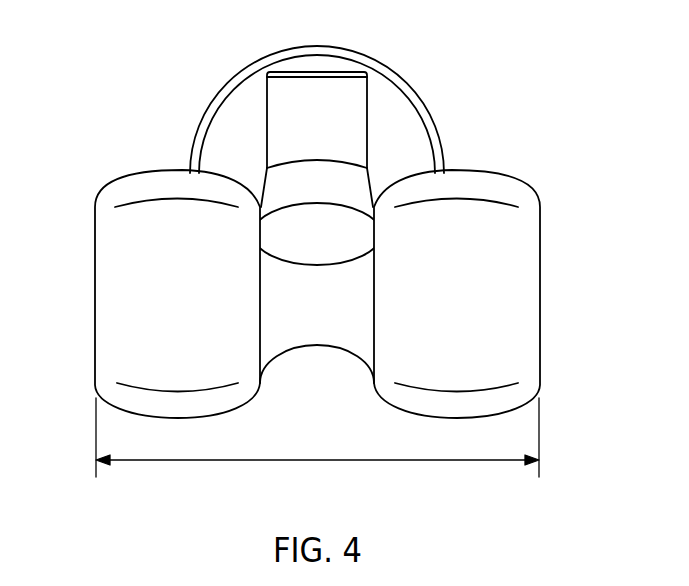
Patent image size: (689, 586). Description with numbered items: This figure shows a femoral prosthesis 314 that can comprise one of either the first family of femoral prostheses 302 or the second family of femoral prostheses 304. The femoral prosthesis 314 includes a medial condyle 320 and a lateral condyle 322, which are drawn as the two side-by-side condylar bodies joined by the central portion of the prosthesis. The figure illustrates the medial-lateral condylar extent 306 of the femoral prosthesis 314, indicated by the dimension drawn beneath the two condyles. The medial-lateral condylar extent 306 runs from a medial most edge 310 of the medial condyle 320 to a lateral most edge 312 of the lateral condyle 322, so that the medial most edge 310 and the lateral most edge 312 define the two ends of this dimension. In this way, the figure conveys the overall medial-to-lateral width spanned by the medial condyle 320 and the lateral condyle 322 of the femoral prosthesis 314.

The first family of femoral prostheses 302 is at (448, 43).
The second family of femoral prostheses 304 is at (317, 109).
The medial-lateral condylar extent 306 is at (315, 460).
The medial most edge 310 is at (95, 378).
The lateral most edge 312 is at (540, 375).
The femoral prosthesis 314 is at (468, 103).
The medial condyle 320 is at (142, 285).
The lateral condyle 322 is at (490, 287).